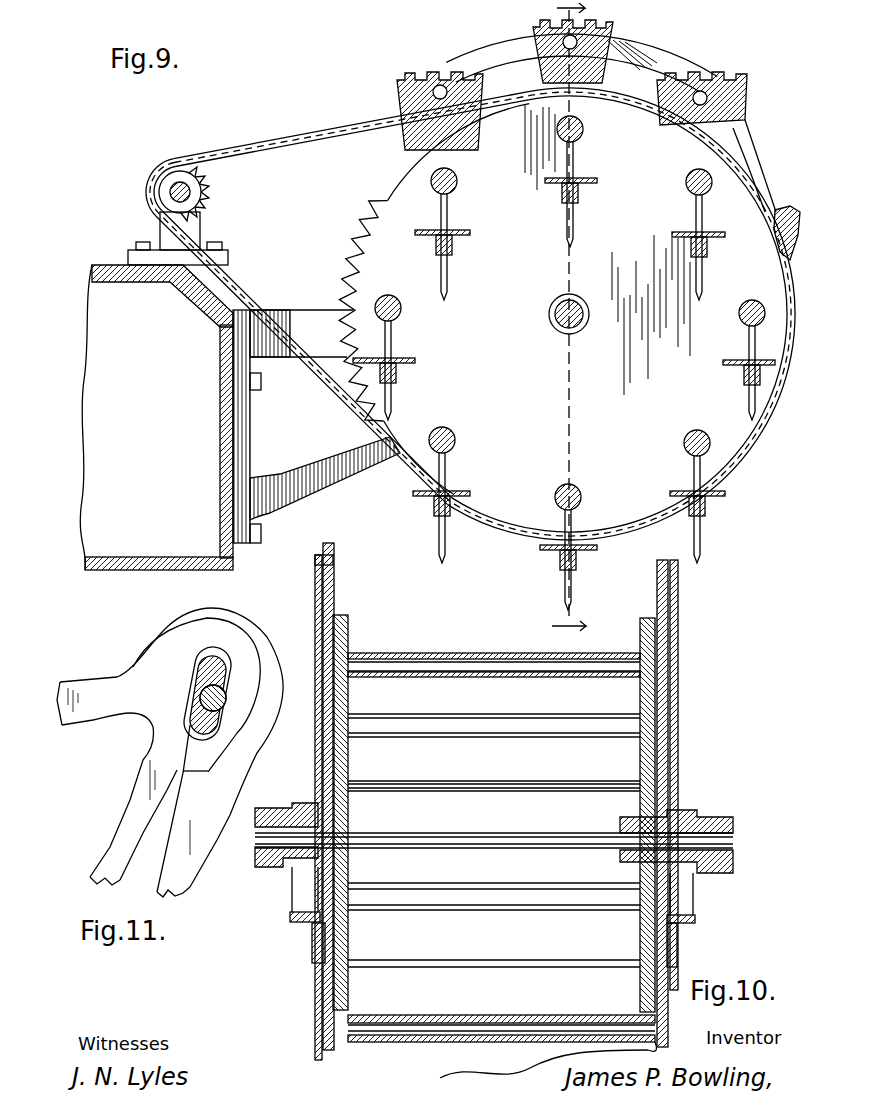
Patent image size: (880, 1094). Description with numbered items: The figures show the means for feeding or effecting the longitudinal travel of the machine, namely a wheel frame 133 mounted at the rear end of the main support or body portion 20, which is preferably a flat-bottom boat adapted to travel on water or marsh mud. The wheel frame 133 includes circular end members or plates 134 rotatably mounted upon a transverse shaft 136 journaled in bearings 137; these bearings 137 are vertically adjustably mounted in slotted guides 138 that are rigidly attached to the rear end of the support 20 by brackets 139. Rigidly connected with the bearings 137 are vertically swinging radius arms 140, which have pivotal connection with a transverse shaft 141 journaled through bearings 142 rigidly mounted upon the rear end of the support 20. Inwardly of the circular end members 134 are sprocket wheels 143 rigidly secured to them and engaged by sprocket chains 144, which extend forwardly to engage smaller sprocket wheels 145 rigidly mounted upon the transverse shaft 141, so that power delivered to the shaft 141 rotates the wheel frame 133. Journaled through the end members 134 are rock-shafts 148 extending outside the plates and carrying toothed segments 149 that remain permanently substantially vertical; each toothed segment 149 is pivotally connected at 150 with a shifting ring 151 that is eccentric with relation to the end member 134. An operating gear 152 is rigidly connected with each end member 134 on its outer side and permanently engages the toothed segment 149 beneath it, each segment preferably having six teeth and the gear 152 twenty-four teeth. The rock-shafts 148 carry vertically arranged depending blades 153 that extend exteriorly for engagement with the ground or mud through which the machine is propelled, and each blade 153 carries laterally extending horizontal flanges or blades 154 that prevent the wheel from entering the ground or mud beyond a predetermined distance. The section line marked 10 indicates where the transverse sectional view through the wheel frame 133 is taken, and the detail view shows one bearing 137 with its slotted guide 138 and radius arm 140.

In FIG. 9, the section line arrow 10 is at (569, 327).
In FIG. 9, the main support or body portion 20 is at (156, 417).
In FIG. 9, the wheel frame 133 is at (755, 467).
In FIG. 10, the circular end members or plates 134 is at (668, 740).
In FIG. 9, the transverse shaft 136 is at (557, 330).
In FIG. 10, the transverse shaft 136 is at (480, 833).
In FIG. 11, the transverse shaft 136 is at (222, 688).
In FIG. 10, the bearings 137 is at (262, 878).
In FIG. 11, the bearings 137 is at (225, 735).
In FIG. 10, the slotted guides 138 is at (312, 938).
In FIG. 11, the slotted guides 138 is at (128, 815).
In FIG. 9, the brackets 139 is at (255, 428).
In FIG. 10, the radius arms 140 is at (257, 856).
In FIG. 9, the transverse shaft 141 is at (195, 196).
In FIG. 9, the bearings 142 is at (205, 238).
In FIG. 9, the sprocket wheels 143 is at (514, 299).
In FIG. 10, the sprocket wheels 143 is at (655, 645).
In FIG. 9, the sprocket chains 144 is at (341, 149).
In FIG. 9, the smaller sprocket wheels 145 is at (203, 176).
In FIG. 9, the rock-shafts 148 is at (582, 497).
In FIG. 10, the rock-shafts 148 is at (450, 1014).
In FIG. 9, the toothed segments 149 is at (722, 118).
In FIG. 10, the toothed segments 149 is at (682, 976).
In FIG. 9, the pivotal connection 150 is at (710, 96).
In FIG. 9, the shifting ring 151 is at (753, 182).
In FIG. 10, the operating gear 152 is at (668, 793).
In FIG. 9, the blades 153 is at (703, 528).
In FIG. 10, the blades 153 is at (430, 875).
In FIG. 9, the horizontal flanges or blades 154 is at (578, 552).
In FIG. 10, the horizontal flanges or blades 154 is at (546, 714).